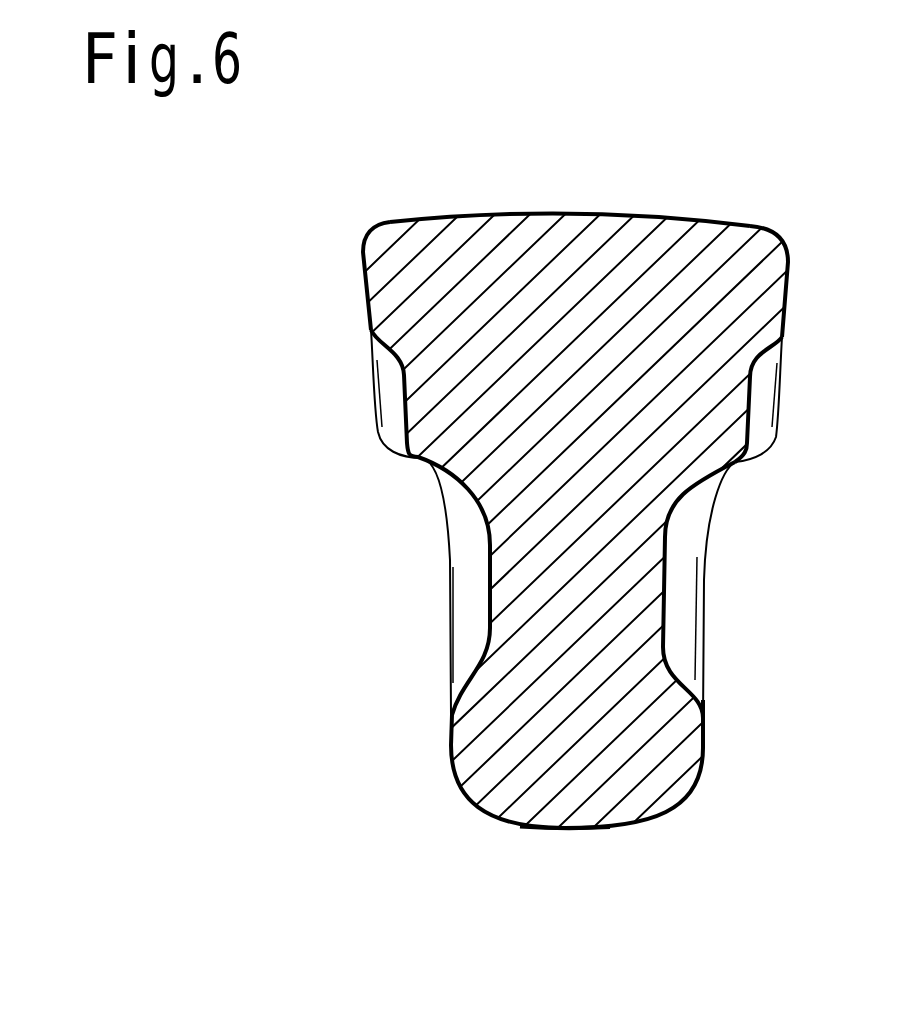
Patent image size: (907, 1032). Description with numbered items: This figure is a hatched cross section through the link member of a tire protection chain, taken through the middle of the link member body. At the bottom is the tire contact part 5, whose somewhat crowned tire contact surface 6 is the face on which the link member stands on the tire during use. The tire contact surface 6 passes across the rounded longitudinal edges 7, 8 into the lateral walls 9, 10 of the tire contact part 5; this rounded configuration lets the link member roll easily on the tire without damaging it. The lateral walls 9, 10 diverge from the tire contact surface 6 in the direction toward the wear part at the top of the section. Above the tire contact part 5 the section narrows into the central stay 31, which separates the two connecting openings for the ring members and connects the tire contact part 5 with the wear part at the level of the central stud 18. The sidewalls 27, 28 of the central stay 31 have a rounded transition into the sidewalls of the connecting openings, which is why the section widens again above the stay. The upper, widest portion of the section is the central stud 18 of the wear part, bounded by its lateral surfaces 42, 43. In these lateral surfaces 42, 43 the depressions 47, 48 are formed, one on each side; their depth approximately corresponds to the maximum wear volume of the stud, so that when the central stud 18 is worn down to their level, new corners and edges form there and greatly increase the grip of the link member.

The tire contact part 5 is at (643, 733).
The tire contact surface 6 is at (564, 830).
The rounded longitudinal edge 7 is at (467, 803).
The rounded longitudinal edge 8 is at (692, 800).
The lateral wall 9 is at (450, 742).
The lateral wall 10 is at (705, 750).
The central stud 18 is at (688, 240).
The sidewall of the central stay 27 is at (665, 598).
The sidewall of the central stay 28 is at (490, 602).
The central stay 31 is at (623, 553).
The lateral surface of the central stud 42 is at (790, 287).
The lateral surface of the central stud 43 is at (365, 275).
The depression 47 is at (758, 398).
The depression 48 is at (387, 398).